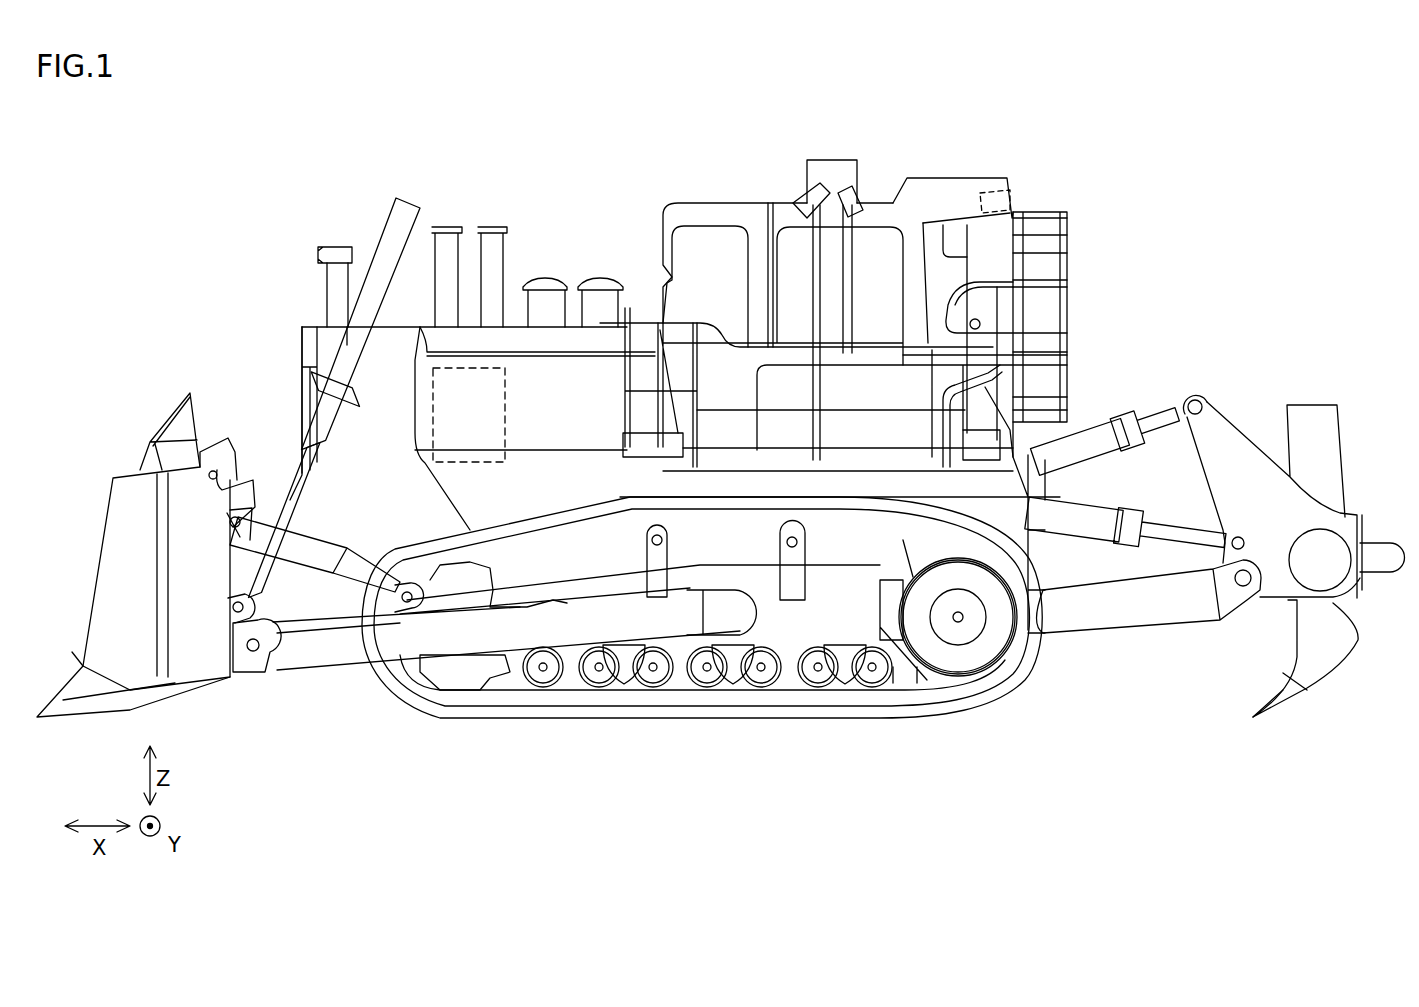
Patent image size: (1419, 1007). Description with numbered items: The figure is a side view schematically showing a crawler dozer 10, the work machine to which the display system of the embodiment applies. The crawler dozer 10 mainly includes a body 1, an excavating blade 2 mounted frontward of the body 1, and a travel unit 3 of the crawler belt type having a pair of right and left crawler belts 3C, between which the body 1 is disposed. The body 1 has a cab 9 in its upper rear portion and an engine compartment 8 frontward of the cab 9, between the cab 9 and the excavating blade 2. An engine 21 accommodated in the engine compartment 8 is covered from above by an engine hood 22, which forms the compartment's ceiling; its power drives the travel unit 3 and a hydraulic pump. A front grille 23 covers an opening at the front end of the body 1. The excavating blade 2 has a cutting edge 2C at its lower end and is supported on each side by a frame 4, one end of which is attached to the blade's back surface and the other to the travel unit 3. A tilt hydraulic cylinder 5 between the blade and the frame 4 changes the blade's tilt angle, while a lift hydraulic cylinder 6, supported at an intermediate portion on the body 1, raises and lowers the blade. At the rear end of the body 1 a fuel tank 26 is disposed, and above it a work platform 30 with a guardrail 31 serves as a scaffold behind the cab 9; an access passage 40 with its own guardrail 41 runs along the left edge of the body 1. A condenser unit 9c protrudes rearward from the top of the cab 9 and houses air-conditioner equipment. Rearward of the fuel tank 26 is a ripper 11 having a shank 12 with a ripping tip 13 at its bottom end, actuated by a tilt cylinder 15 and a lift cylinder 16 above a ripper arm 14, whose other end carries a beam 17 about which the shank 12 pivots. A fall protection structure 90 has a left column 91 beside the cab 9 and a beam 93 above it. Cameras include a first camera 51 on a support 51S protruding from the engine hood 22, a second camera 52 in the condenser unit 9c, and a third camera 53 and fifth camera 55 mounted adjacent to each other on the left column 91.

The body 1 is at (575, 362).
The excavating blade 2 is at (125, 563).
The cutting edge 2C is at (37, 717).
The travel unit 3 is at (660, 708).
The crawler belts 3C is at (720, 720).
The frame 4 is at (355, 645).
The tilt hydraulic cylinder 5 is at (328, 560).
The lift hydraulic cylinder 6 is at (400, 247).
The engine compartment 8 is at (510, 380).
The cab 9 is at (780, 215).
The condenser unit 9c is at (950, 195).
The crawler dozer 10 is at (1036, 142).
The ripper 11 is at (1340, 378).
The shank 12 is at (1330, 645).
The ripping tip 13 is at (1257, 713).
The ripper arm 14 is at (1155, 598).
The tilt cylinder 15 is at (1095, 440).
The lift cylinder 16 is at (1085, 520).
The beam 17 is at (1320, 540).
The engine 21 is at (462, 365).
The engine hood 22 is at (405, 328).
The front grille 23 is at (284, 366).
The fuel tank 26 is at (1070, 368).
The work platform 30 is at (1045, 345).
The guardrail 31 is at (1070, 232).
The access passage 40 is at (840, 465).
The guardrail 41 is at (915, 355).
The first camera 51 is at (337, 256).
The support 51S is at (337, 292).
The second camera 52 is at (995, 190).
The third camera 53 is at (805, 180).
The fifth camera 55 is at (846, 186).
The fall protection structure 90 is at (838, 140).
The left column 91 is at (858, 265).
The beam 93 is at (800, 180).